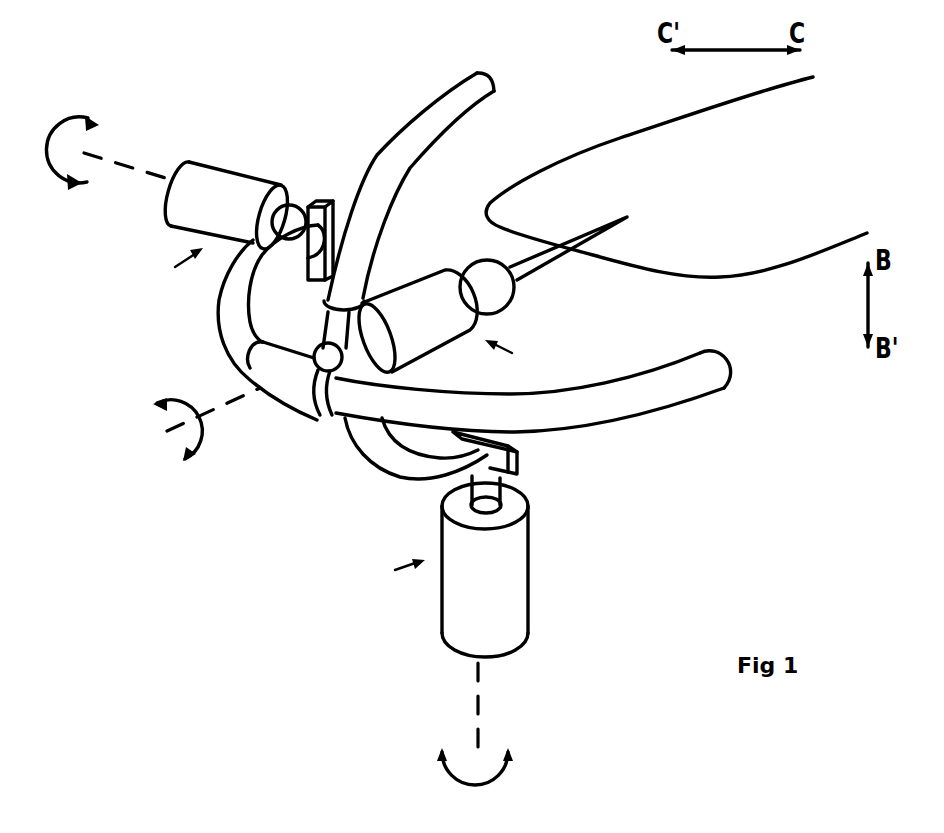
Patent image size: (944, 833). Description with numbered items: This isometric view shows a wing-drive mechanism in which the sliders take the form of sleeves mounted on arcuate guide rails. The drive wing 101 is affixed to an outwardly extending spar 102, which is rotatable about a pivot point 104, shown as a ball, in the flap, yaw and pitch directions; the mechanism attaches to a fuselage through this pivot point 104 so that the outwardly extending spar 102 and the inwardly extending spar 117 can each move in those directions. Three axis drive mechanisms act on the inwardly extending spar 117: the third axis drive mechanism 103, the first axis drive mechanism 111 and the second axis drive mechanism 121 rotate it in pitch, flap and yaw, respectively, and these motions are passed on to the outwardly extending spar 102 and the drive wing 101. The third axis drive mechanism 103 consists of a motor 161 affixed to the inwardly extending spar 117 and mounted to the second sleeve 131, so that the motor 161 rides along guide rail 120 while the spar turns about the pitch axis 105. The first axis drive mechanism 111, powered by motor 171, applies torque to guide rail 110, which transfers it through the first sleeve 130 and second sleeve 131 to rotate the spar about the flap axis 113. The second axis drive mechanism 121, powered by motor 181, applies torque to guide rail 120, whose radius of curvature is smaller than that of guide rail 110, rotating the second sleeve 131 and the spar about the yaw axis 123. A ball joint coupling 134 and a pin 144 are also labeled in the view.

The drive wing 101 is at (676, 177).
The outwardly extending spar 102 is at (530, 270).
The third axis drive mechanism 103 is at (489, 302).
The pivot point 104 is at (482, 278).
The pitch axis 105 is at (214, 394).
The guide rail 110 is at (533, 391).
The first axis drive mechanism 111 is at (242, 213).
The flap axis 113 is at (130, 160).
The inwardly extending spar 117 is at (400, 362).
The guide rail 120 is at (494, 87).
The second axis drive mechanism 121 is at (468, 566).
The yaw axis 123 is at (487, 702).
The first sleeve 130 is at (308, 393).
The second sleeve 131 is at (340, 335).
The ball joint coupling 134 is at (287, 217).
The pin 144 is at (492, 487).
The motor 161 is at (419, 321).
The motor 171 is at (232, 197).
The motor 181 is at (485, 570).